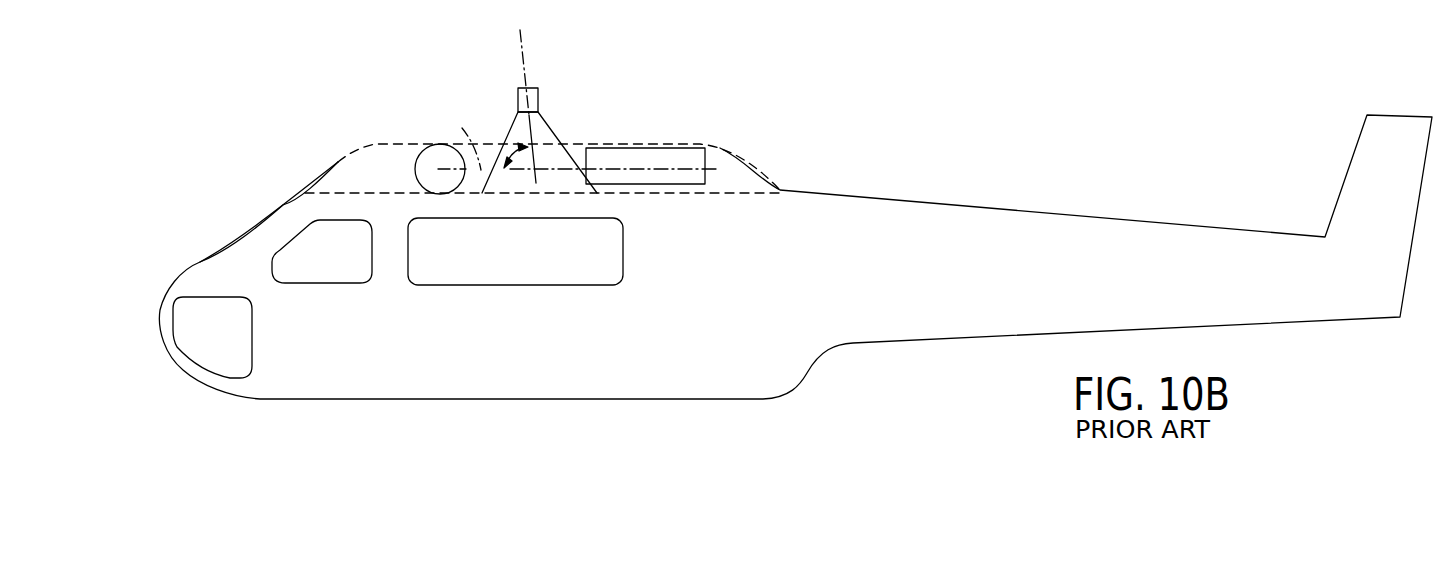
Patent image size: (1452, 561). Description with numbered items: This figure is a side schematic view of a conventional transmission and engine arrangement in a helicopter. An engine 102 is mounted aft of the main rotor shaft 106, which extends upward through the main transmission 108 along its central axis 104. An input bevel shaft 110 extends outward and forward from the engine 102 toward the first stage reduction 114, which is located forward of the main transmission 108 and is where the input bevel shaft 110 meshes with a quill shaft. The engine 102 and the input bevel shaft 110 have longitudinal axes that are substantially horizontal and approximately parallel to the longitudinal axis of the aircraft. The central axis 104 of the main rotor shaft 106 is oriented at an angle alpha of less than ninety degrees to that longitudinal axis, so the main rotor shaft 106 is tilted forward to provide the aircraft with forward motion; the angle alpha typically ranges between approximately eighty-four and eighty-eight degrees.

The engine 102 is at (652, 146).
The central axis 104 is at (525, 67).
The main rotor shaft 106 is at (538, 92).
The main transmission 108 is at (558, 137).
The input bevel shaft 110 is at (462, 128).
The first stage reduction 114 is at (437, 144).
The angle α alpha is at (513, 143).